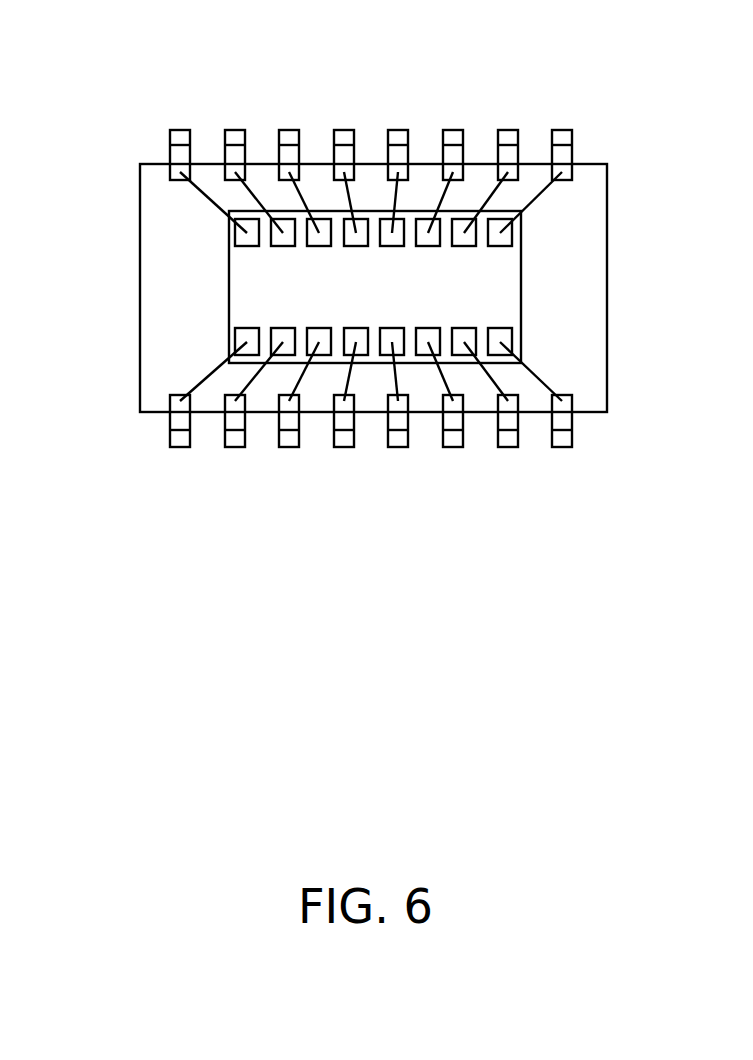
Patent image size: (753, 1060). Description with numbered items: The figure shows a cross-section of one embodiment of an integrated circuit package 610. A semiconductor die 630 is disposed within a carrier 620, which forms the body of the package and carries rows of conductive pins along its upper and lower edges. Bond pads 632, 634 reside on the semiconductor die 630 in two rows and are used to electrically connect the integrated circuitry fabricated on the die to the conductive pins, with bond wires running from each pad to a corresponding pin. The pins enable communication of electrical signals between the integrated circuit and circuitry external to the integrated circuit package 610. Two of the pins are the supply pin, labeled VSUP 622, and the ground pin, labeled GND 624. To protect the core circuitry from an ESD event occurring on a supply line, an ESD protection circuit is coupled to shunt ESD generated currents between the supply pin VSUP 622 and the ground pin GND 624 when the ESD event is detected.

The integrated circuit package 610 is at (57, 38).
The carrier 620 is at (607, 280).
The supply pin (VSUP) 622 is at (179, 451).
The ground pin (GND) 624 is at (176, 124).
The semiconductor die 630 is at (238, 285).
The bond pads 632 is at (237, 233).
The bond pads 634 is at (239, 342).